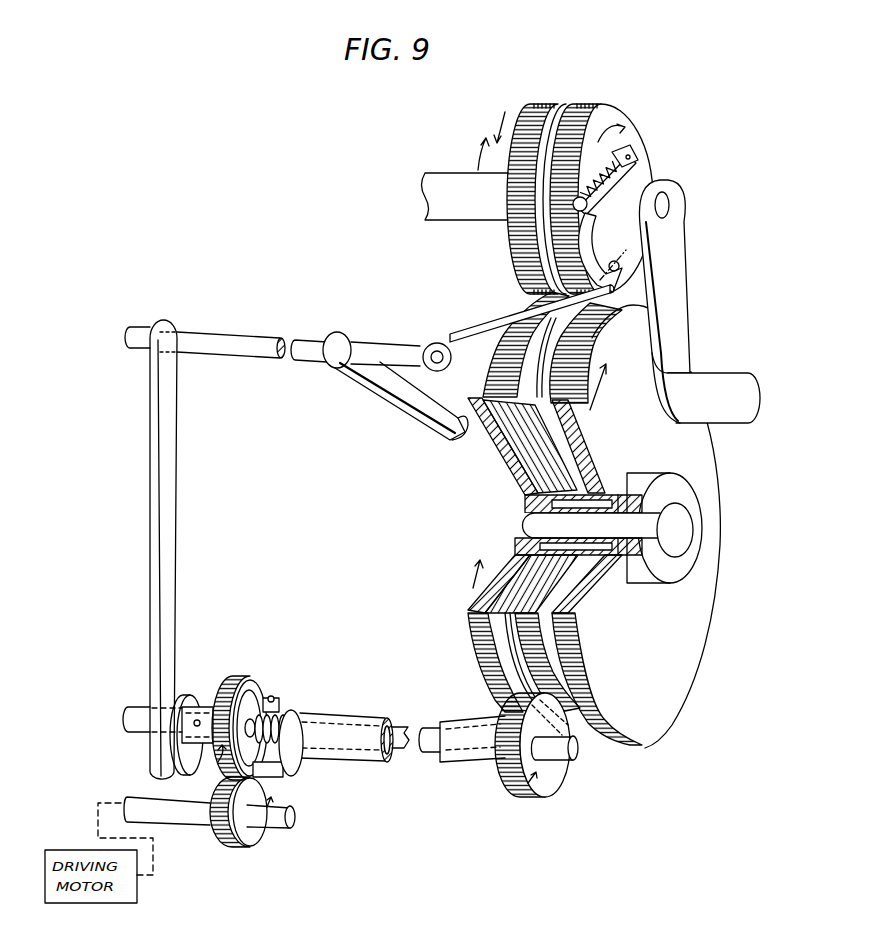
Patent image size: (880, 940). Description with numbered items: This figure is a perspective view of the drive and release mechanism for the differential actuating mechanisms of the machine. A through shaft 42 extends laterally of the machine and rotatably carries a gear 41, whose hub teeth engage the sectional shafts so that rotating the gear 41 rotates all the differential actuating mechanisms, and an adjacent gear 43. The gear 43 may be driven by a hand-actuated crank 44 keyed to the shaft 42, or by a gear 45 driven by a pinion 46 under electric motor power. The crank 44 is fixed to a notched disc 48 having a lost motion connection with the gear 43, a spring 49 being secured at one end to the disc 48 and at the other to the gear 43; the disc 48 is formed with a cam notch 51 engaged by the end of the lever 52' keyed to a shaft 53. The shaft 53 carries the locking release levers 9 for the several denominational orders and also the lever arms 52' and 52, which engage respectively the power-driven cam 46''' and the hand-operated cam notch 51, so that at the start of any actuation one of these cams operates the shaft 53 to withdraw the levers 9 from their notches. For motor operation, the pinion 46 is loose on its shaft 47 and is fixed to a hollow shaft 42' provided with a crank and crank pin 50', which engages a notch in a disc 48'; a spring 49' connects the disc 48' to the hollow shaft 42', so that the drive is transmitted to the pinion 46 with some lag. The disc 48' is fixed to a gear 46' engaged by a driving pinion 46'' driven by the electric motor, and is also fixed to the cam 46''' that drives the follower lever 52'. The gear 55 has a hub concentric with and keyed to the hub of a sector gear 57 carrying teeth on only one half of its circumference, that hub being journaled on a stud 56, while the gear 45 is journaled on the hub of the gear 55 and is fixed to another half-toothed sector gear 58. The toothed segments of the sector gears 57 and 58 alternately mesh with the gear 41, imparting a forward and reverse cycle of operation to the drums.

The gear 41 is at (545, 110).
The gear 43 is at (590, 108).
The through shaft 42 is at (449, 193).
The spring 49 is at (628, 177).
The notched disc 48 is at (646, 252).
The cam notch 51 is at (616, 262).
The hand-actuated crank 44 is at (677, 312).
The lever arm 52 is at (518, 328).
The gear 45 is at (513, 337).
The shaft 53 is at (262, 343).
The lever 9 is at (367, 383).
The stud 56 is at (685, 532).
The gear 55 is at (683, 672).
The sector gear 57 is at (468, 630).
The sector gear 58 is at (498, 650).
The shaft 47 is at (580, 753).
The follower lever 52' is at (181, 549).
The cam 46''' is at (186, 709).
The gear 46' is at (245, 716).
The disc 48' is at (288, 689).
The spring 49' is at (294, 713).
The crank pin 50' is at (290, 756).
The driving pinion 46'' is at (238, 830).
The hollow shaft 42' is at (462, 761).
The pinion 46 is at (528, 760).